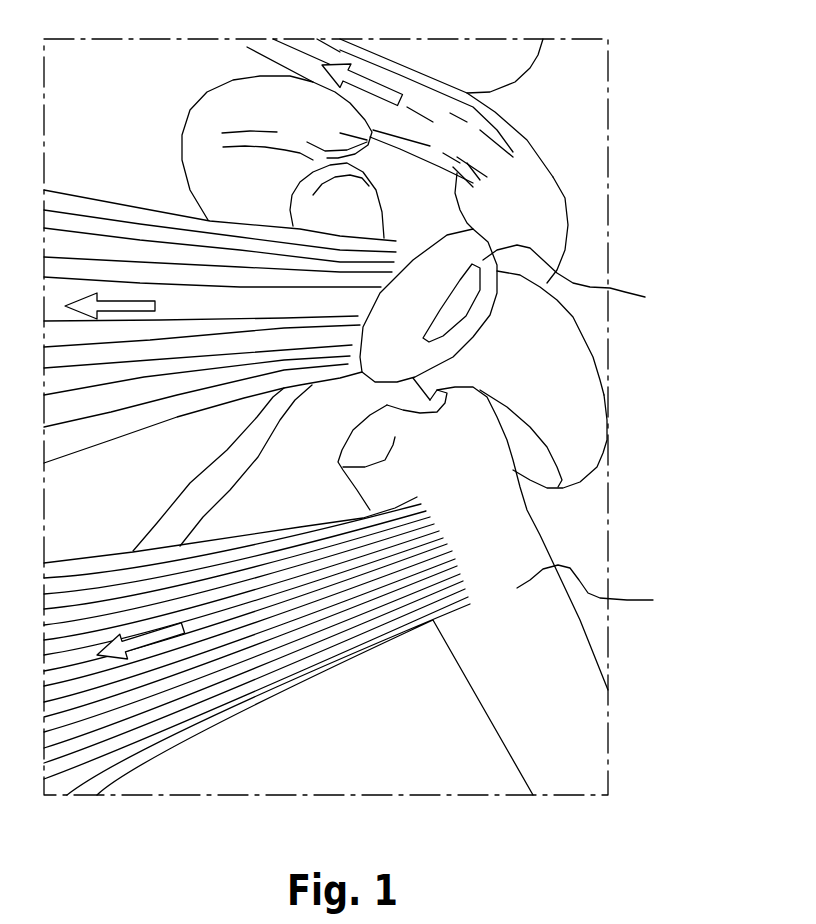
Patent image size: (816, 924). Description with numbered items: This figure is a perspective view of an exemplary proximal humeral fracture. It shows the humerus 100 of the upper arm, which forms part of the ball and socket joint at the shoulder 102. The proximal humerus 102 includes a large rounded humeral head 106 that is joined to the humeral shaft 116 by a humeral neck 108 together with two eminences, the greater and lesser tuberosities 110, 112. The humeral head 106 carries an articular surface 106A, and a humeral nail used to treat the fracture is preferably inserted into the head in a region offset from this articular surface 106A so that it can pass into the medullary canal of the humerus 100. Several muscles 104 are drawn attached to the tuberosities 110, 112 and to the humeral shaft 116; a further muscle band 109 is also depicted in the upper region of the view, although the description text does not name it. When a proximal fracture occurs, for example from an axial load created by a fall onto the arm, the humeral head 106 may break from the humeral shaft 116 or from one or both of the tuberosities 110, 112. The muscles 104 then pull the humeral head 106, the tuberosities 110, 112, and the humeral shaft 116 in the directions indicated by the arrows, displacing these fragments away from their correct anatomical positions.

The humerus 100 is at (571, 591).
The shoulder 102 is at (615, 449).
The muscles 104 is at (44, 305).
The humeral head 106 is at (602, 333).
The articular surface 106A is at (599, 434).
The humeral neck 108 is at (290, 468).
The deltoid muscle 109 is at (475, 147).
The greater tuberosity 110 is at (585, 279).
The lesser tuberosity 112 is at (561, 161).
The humeral shaft 116 is at (609, 589).